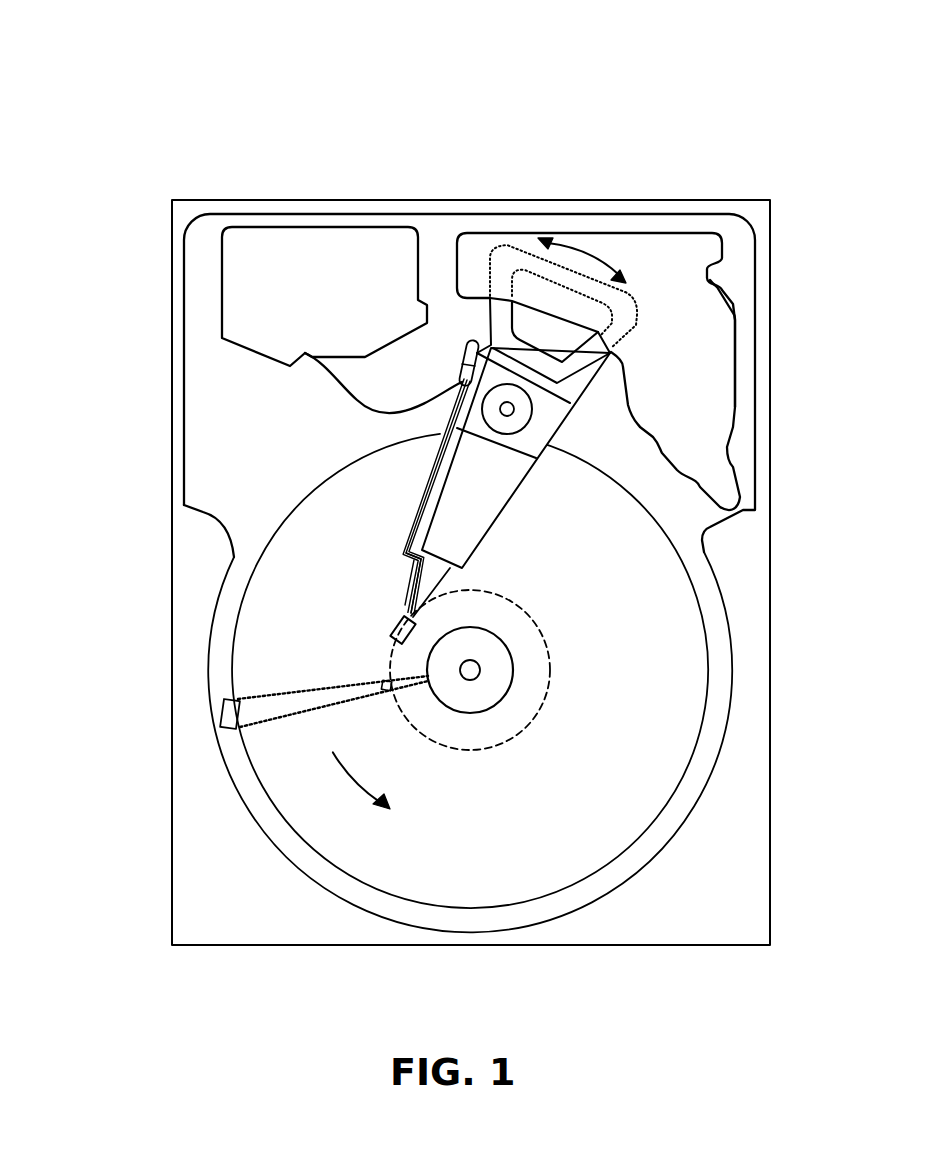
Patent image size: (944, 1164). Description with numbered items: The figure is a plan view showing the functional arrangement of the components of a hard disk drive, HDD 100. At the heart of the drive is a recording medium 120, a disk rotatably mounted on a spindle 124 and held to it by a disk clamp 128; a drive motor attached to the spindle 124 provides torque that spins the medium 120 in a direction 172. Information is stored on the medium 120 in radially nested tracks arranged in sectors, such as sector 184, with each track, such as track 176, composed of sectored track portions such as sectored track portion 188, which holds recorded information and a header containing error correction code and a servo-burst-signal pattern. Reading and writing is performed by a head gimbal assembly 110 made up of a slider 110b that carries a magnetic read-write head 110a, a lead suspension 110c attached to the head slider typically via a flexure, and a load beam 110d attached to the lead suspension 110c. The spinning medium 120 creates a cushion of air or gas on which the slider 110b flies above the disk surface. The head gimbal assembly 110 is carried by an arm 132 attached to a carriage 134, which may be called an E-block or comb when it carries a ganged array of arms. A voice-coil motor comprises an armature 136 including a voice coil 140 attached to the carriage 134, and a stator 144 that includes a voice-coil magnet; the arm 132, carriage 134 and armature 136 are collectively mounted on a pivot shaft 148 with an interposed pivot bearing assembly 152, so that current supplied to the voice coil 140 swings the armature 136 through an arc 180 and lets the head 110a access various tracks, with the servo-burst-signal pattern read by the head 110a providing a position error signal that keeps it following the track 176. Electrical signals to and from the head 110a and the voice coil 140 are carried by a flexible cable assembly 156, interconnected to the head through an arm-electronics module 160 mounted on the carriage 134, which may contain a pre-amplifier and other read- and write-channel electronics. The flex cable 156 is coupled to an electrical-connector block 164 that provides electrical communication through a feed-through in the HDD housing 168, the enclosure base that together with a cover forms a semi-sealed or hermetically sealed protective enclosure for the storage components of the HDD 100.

The hard disk drive 100 is at (104, 87).
The head gimbal assembly 110 is at (101, 490).
The magnetic read-write head 110a is at (397, 636).
The slider 110b is at (407, 613).
The lead suspension 110c is at (412, 580).
The load beam 110d is at (405, 552).
The recording medium 120 is at (637, 628).
The spindle 124 is at (480, 670).
The disk clamp 128 is at (493, 687).
The arm 132 is at (463, 517).
The carriage 134 is at (523, 442).
The armature 136 is at (488, 338).
The voice coil 140 is at (503, 305).
The stator 144 is at (703, 318).
The pivot shaft 148 is at (516, 409).
The pivot bearing assembly 152 is at (520, 422).
The flexible cable assembly 156 is at (337, 388).
The arm-electronics module 160 is at (462, 380).
The electrical-connector block 164 is at (247, 295).
The HDD housing 168 is at (750, 212).
The direction 172 is at (367, 783).
The track 176 is at (540, 633).
The arc 180 is at (587, 246).
The sector 184 is at (222, 713).
The sectored track portion 188 is at (383, 685).